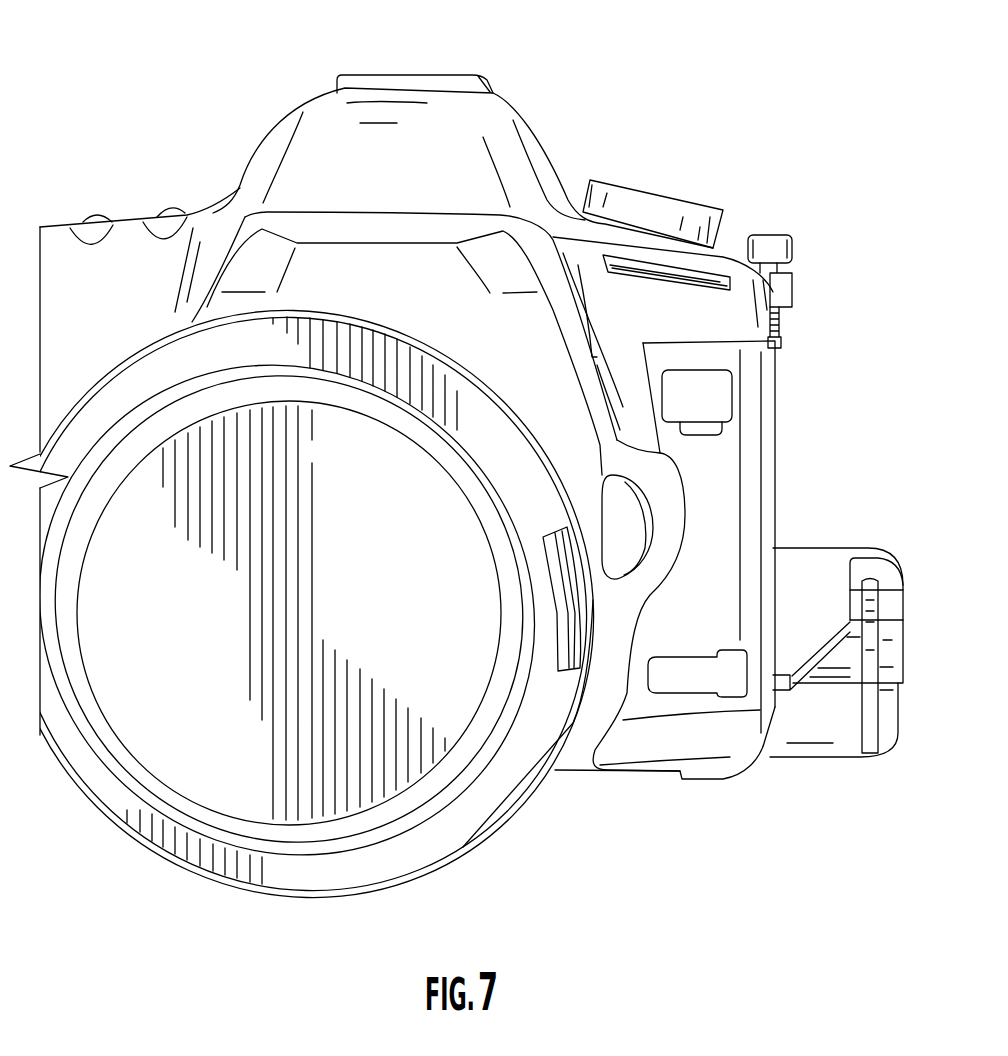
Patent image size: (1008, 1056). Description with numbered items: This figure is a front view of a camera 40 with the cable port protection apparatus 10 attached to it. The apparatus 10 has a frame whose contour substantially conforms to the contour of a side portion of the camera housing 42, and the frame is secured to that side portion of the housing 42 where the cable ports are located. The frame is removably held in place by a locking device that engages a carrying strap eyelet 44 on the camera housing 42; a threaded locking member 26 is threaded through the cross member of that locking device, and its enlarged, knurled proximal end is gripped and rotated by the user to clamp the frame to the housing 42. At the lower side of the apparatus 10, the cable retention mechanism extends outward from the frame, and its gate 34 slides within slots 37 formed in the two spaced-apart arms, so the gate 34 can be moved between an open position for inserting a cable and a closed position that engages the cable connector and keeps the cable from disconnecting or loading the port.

The cable port protection apparatus 10 is at (815, 381).
The threaded locking member 26 is at (778, 235).
The gate 34 is at (865, 625).
The slot 37 is at (866, 607).
The camera 40 is at (513, 79).
The camera housing 42 is at (618, 240).
The carrying strap eyelet 44 is at (777, 348).